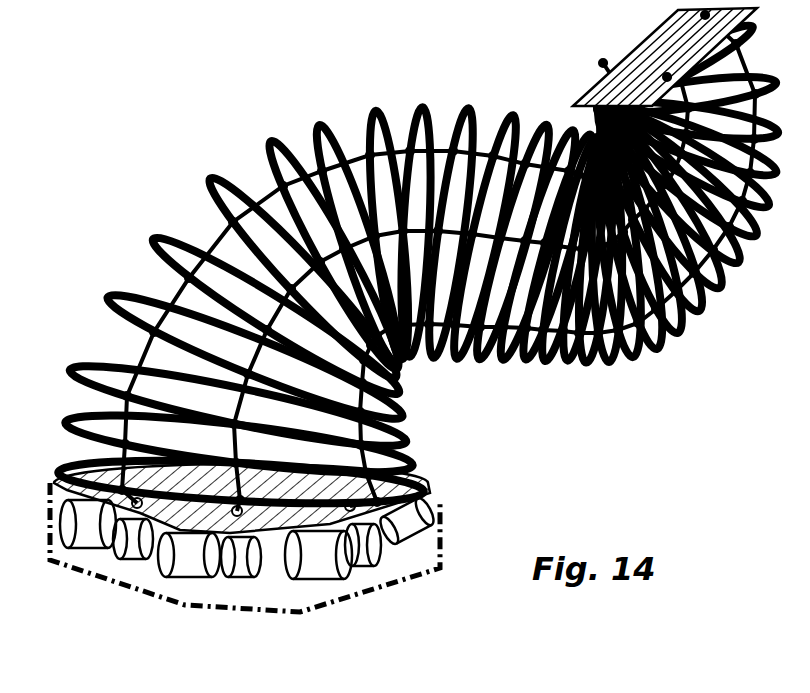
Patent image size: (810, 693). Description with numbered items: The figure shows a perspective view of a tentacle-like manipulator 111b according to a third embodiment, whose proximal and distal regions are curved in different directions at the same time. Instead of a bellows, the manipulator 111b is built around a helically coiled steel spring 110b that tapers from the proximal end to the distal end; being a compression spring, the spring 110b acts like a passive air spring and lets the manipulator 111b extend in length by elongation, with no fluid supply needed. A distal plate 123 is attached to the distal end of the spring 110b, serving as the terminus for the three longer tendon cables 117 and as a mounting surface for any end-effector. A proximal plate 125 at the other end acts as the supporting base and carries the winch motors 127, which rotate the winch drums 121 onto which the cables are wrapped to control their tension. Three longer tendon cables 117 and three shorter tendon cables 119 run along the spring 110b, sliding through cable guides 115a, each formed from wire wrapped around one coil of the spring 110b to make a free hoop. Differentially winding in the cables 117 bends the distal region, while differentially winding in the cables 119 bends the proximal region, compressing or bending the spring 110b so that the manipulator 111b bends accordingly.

The helically coiled steel spring 110b is at (338, 292).
The tentacle-like manipulator 111b is at (444, 104).
The cable guide 115a is at (308, 158).
The tendon cable 117 is at (187, 290).
The tendon cable 119 is at (220, 233).
The winch drum 121 is at (233, 560).
The distal plate 123 is at (648, 53).
The proximal plate 125 is at (270, 530).
The winch motor 127 is at (187, 557).